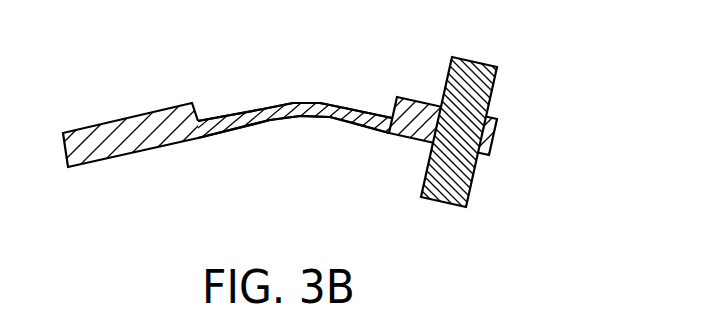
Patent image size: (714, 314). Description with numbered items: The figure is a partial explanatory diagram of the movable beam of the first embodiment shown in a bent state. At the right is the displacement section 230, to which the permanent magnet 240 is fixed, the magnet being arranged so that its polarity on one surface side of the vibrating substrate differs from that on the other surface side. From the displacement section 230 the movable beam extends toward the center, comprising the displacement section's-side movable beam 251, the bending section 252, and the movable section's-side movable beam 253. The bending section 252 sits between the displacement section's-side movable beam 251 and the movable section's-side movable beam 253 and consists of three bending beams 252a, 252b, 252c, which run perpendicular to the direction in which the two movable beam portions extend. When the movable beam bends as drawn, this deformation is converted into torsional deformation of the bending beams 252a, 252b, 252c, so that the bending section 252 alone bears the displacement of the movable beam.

The displacement section 230 is at (488, 131).
The permanent magnet 240 is at (486, 73).
The displacement section's-side movable beam 251 is at (356, 105).
The bending section 252 is at (308, 103).
The bending beam 252a is at (321, 123).
The bending beam 252b is at (302, 121).
The bending beam 252c is at (277, 124).
The movable section's-side movable beam 253 is at (261, 104).